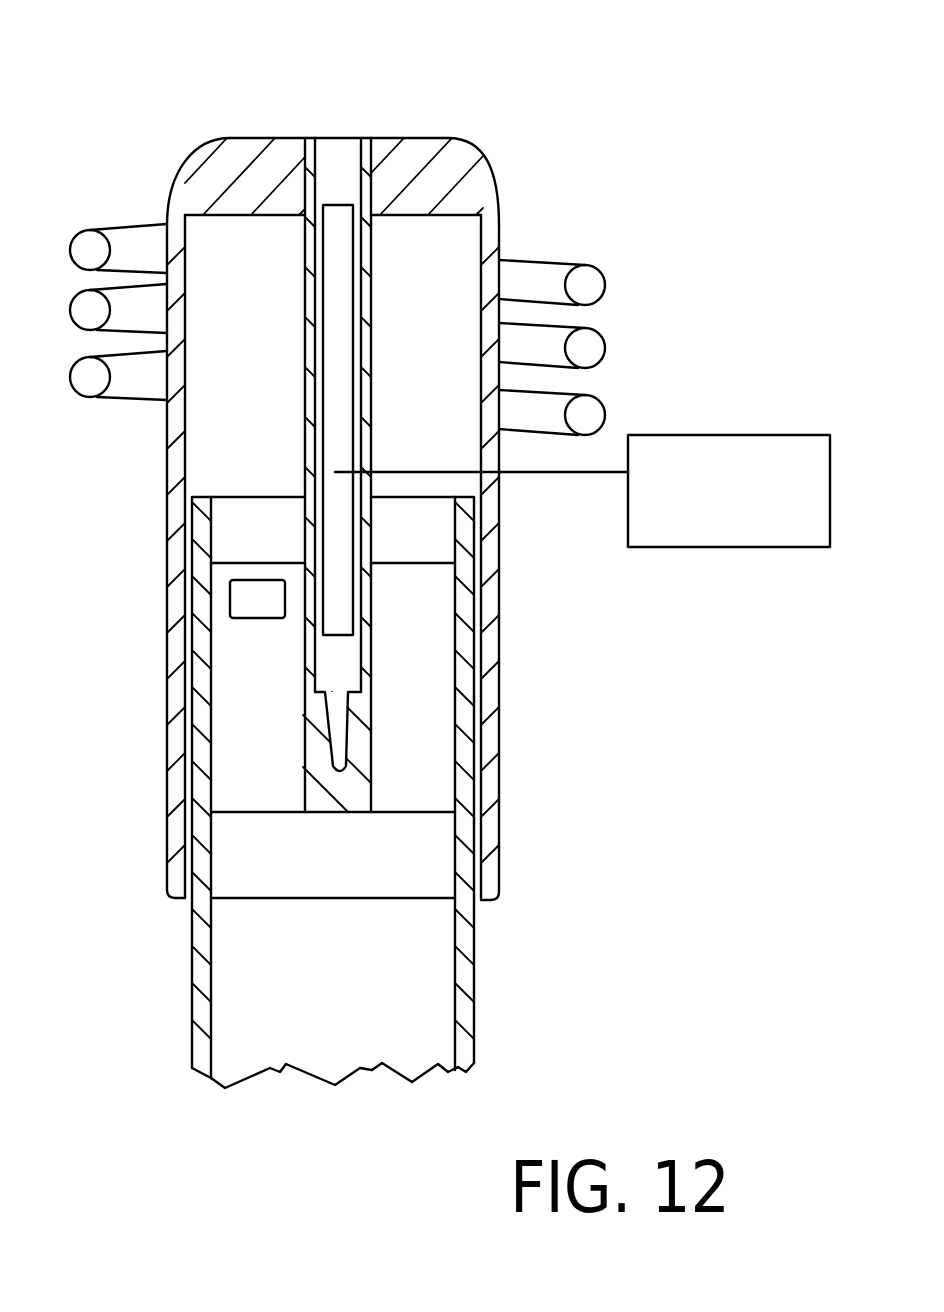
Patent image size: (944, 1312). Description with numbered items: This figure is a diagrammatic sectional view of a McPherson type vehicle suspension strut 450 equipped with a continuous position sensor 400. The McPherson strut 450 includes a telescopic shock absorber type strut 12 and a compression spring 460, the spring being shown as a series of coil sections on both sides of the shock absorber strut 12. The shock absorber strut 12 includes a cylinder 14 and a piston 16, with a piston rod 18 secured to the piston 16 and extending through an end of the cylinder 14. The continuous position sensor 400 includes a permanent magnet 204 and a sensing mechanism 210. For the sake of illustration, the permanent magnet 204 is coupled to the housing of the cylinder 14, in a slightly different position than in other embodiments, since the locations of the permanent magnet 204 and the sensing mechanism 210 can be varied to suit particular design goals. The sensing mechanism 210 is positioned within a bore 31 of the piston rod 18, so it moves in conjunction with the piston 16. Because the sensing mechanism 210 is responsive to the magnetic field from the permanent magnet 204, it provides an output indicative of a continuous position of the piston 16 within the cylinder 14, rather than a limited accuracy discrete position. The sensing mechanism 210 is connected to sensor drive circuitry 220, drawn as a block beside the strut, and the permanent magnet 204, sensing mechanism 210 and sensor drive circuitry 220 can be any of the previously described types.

The McPherson type vehicle suspension strut 450 is at (516, 98).
The shock absorber type vehicle suspension strut 12 is at (520, 214).
The continuous position sensor 400 is at (370, 370).
The compression spring 460 is at (598, 342).
The bore 31 is at (360, 203).
The piston rod 18 is at (374, 766).
The sensing mechanism 210 is at (343, 640).
The permanent magnet 204 is at (228, 602).
The sensor drive circuitry 220 is at (665, 548).
The piston 16 is at (407, 835).
The cylinder 14 is at (462, 927).